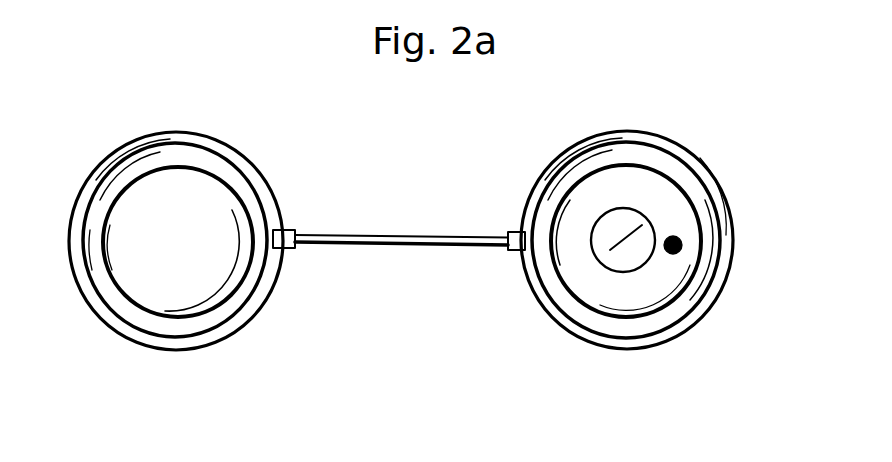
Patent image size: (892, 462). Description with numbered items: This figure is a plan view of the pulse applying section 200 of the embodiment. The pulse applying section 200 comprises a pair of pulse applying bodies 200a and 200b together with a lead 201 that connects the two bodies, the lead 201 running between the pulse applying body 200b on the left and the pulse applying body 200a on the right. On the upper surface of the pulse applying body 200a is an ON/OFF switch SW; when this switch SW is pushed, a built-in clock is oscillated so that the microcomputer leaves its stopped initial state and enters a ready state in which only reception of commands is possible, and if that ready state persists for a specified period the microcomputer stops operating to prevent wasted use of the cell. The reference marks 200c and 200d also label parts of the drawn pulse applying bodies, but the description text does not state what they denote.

The pulse applying section 200 is at (470, 176).
The pulse applying body 200a is at (675, 187).
The pulse applying body 200b is at (200, 200).
The right outer rim 200c is at (732, 260).
The left outer rim 200d is at (232, 322).
The lead 201 is at (397, 235).
The ON/OFF switch SW is at (633, 272).